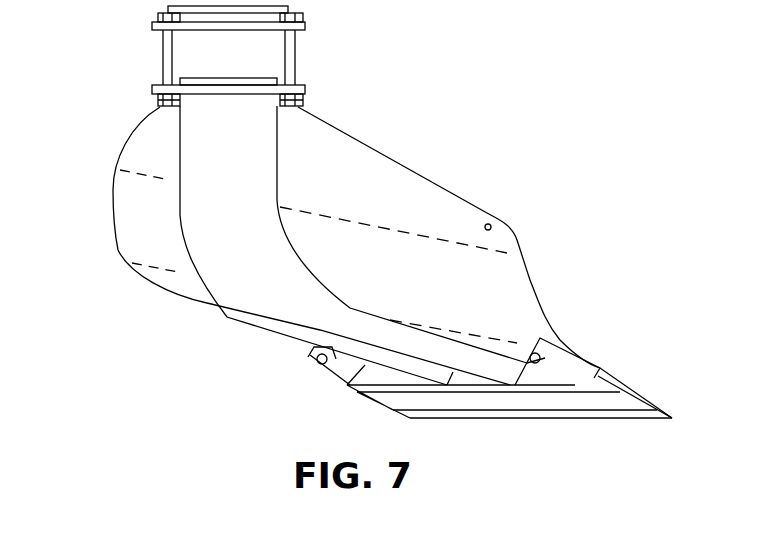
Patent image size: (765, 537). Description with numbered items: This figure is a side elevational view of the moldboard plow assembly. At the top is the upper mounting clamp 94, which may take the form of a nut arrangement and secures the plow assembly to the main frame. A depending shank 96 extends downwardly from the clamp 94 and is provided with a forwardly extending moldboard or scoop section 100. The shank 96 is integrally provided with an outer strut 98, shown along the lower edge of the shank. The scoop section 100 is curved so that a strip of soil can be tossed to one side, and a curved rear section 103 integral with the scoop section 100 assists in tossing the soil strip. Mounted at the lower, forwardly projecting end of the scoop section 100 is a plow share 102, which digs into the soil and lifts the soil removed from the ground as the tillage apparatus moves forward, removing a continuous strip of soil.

The upper mounting clamp 94 is at (298, 63).
The depending shank 96 is at (222, 148).
The outer strut 98 is at (270, 292).
The moldboard or scoop section 100 is at (423, 205).
The plow share 102 is at (658, 397).
The curved rear section 103 is at (150, 240).